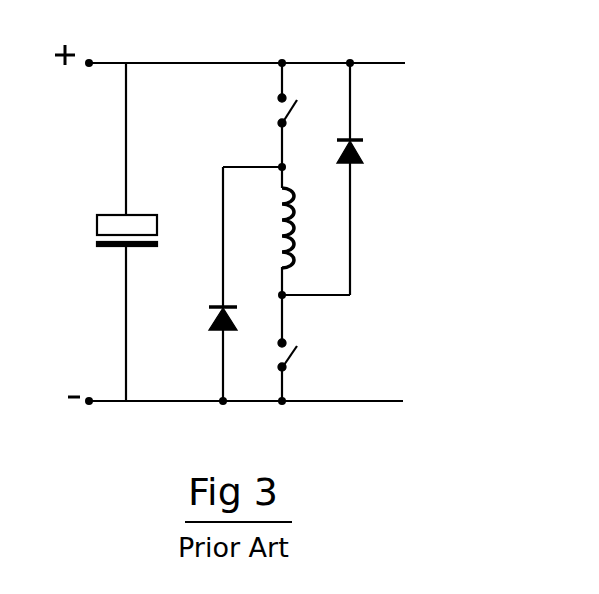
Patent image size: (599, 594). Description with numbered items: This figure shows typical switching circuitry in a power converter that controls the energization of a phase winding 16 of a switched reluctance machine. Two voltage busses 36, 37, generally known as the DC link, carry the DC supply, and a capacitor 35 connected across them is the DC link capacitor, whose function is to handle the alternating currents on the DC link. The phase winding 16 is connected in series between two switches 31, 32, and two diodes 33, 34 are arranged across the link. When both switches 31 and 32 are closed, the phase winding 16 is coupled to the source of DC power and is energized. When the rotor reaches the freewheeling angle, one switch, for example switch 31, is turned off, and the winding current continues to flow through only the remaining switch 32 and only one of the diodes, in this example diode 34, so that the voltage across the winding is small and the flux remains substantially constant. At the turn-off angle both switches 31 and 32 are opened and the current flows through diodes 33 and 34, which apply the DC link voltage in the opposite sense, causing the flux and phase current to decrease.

The phase winding 16 is at (300, 208).
The switch 31 is at (279, 113).
The switch 32 is at (298, 356).
The diode 33 is at (368, 148).
The diode 34 is at (210, 312).
The DC link capacitor 35 is at (94, 239).
The voltage bus 36 is at (197, 63).
The voltage bus 37 is at (180, 402).